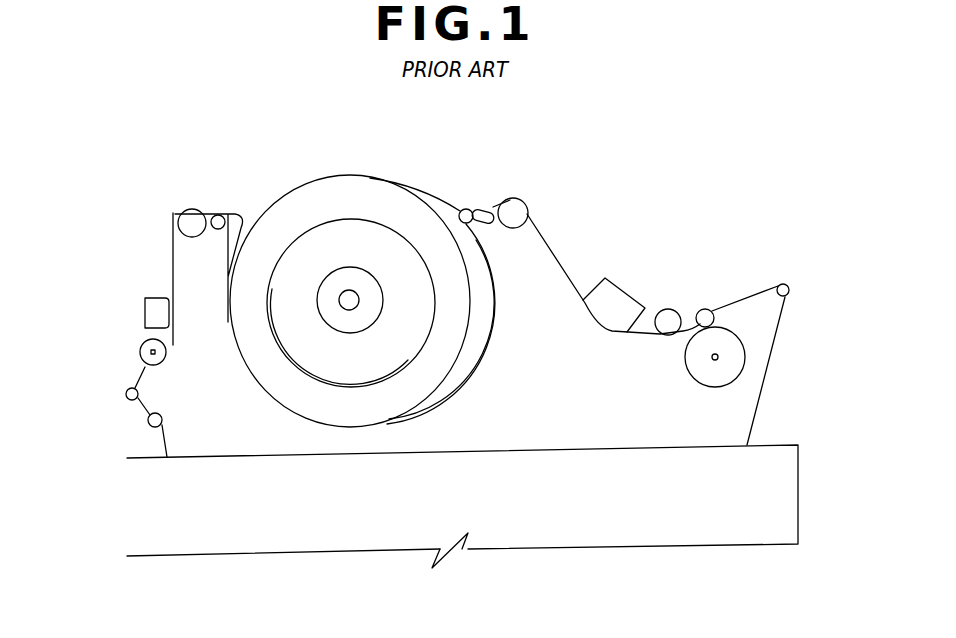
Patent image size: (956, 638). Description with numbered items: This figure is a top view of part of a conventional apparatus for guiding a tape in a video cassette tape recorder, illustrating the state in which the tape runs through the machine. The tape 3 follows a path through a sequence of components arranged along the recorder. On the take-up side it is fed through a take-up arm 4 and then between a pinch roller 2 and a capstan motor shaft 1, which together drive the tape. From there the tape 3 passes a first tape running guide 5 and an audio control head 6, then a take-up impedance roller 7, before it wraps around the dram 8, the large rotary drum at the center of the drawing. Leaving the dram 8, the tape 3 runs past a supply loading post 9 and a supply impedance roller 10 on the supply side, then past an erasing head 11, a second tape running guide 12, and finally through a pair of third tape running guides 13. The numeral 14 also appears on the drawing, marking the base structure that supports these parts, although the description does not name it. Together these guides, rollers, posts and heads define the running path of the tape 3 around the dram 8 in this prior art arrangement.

The capstan motor shaft 1 is at (705, 318).
The pinch roller 2 is at (730, 348).
The tape 3 is at (773, 373).
The take-up arm 4 is at (787, 286).
The first tape running guide 5 is at (672, 318).
The audio control head 6 is at (610, 300).
The take-up impedance roller 7 is at (513, 212).
The dram 8 is at (388, 205).
The supply loading post 9 is at (217, 217).
The supply impedance roller 10 is at (187, 215).
The erasing head 11 is at (145, 305).
The second tape running guide 12 is at (142, 350).
The pair of third tape running guides 13 is at (148, 423).
The base chassis 14 is at (540, 535).